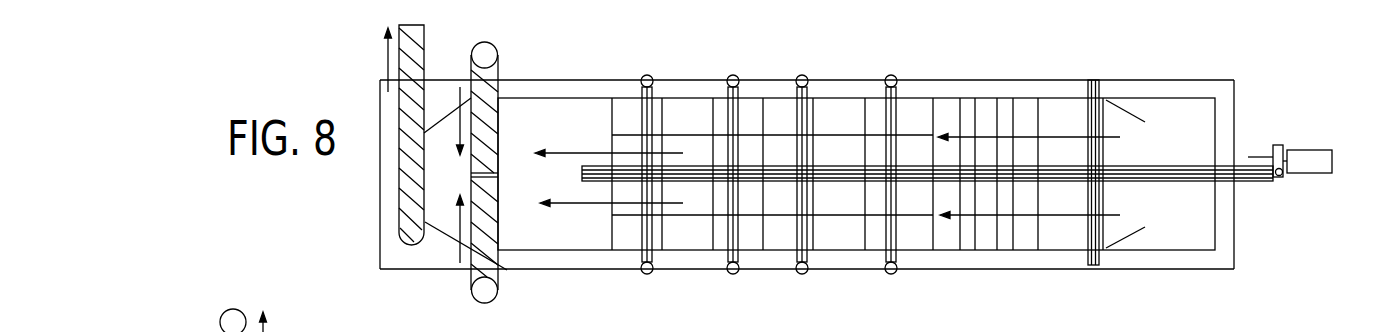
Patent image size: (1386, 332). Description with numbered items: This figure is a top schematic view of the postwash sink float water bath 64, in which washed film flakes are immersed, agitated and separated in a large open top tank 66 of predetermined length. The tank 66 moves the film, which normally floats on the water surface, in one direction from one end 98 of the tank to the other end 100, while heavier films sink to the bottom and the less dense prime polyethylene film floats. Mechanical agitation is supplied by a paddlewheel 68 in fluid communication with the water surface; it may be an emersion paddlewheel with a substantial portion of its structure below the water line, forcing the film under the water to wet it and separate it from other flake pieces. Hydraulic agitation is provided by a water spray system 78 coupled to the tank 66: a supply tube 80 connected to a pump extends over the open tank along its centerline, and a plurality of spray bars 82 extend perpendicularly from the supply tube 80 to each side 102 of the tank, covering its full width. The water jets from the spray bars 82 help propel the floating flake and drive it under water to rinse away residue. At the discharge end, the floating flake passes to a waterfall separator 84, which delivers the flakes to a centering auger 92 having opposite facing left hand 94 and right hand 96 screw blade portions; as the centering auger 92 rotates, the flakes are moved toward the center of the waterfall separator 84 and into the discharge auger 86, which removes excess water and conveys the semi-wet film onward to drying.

The postwash sink float water bath 64 is at (1259, 31).
The sink float tank 66 is at (1235, 238).
The paddlewheel 68 is at (1013, 98).
The water spray system 78 is at (1268, 190).
The supply tube 80 is at (877, 184).
The spray bars 82 is at (727, 89).
The waterfall separator 84 is at (447, 239).
The discharge auger 86 is at (400, 117).
The centering auger 92 is at (517, 123).
The left hand screw blade portion 94 is at (500, 270).
The right hand screw blade portion 96 is at (490, 110).
The one end of the tank 98 is at (1248, 101).
The other end of the tank 100 is at (371, 226).
The side of the tank 102 is at (925, 81).